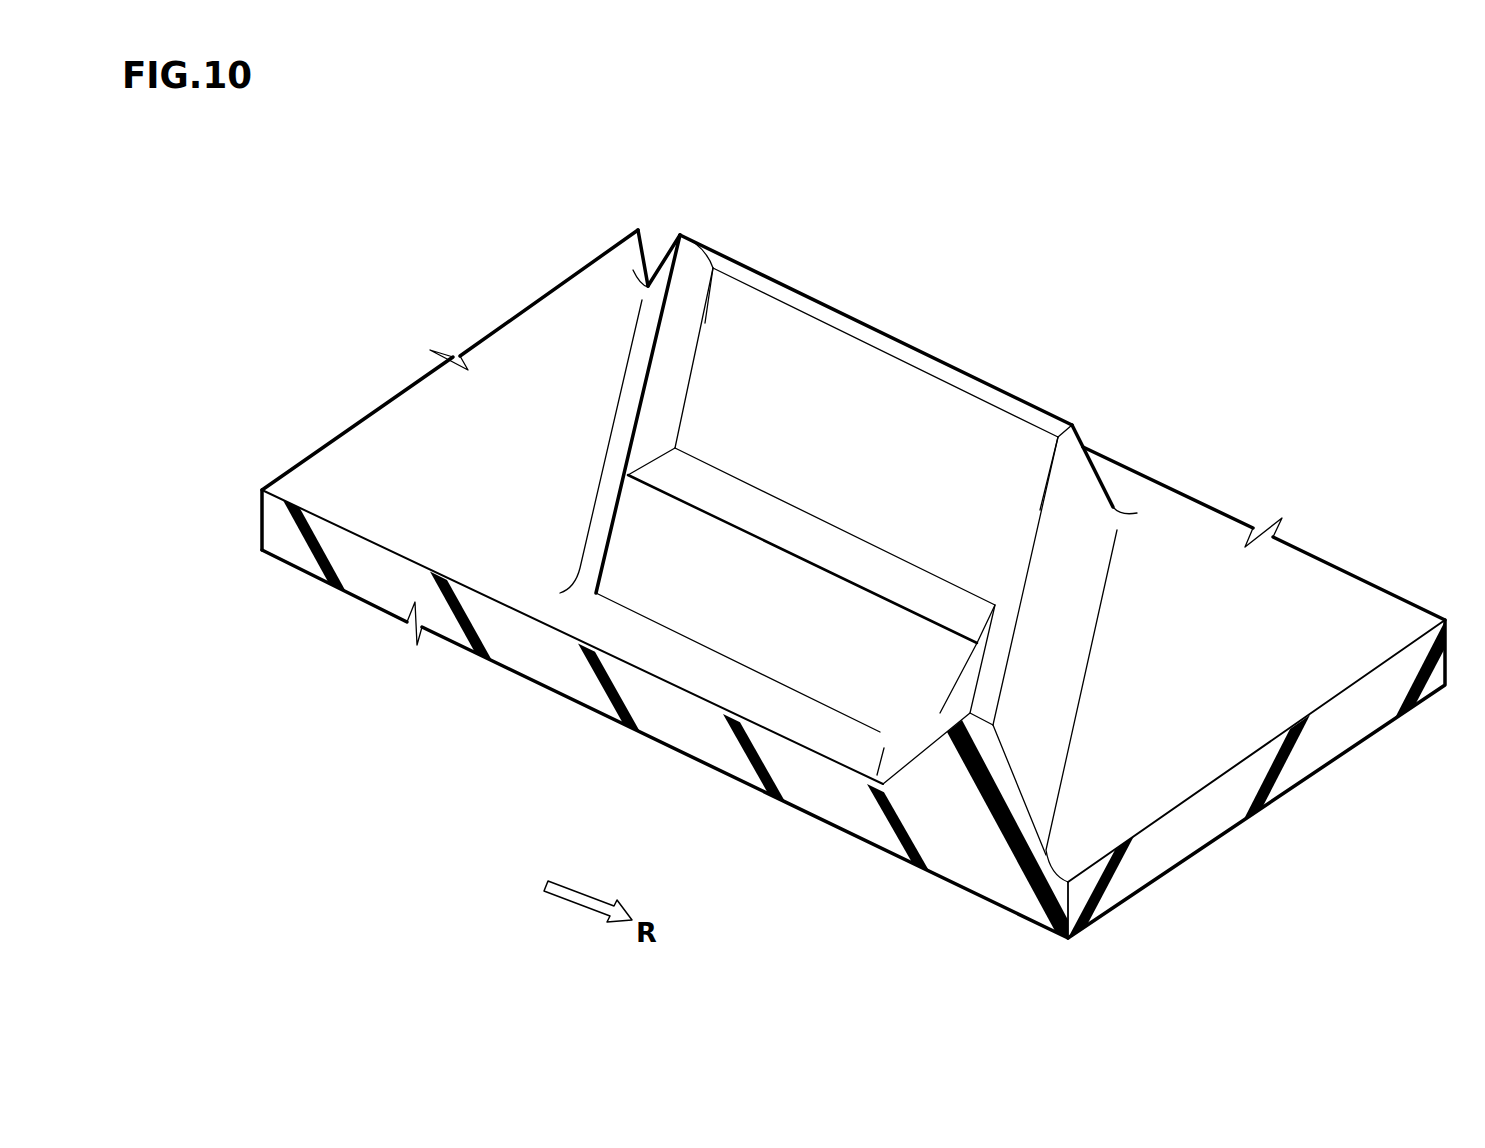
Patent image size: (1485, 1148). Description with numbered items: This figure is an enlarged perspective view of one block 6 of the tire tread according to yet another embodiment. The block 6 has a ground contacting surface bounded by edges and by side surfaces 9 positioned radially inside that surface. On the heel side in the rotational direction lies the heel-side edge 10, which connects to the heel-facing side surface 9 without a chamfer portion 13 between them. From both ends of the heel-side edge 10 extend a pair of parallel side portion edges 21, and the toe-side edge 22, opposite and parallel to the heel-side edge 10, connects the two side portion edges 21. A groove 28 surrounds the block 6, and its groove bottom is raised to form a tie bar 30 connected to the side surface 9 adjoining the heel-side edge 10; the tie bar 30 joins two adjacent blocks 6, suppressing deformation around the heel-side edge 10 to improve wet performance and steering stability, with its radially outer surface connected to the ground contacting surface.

The block 6 is at (583, 213).
The side portion edges 21 is at (808, 315).
The toe-side edge 22 is at (705, 323).
The heel-side edge 10 is at (1040, 510).
The chamfer portion 13 is at (732, 500).
The side surfaces 9 is at (1073, 552).
The groove 28 is at (715, 673).
The tie bar 30 is at (934, 705).